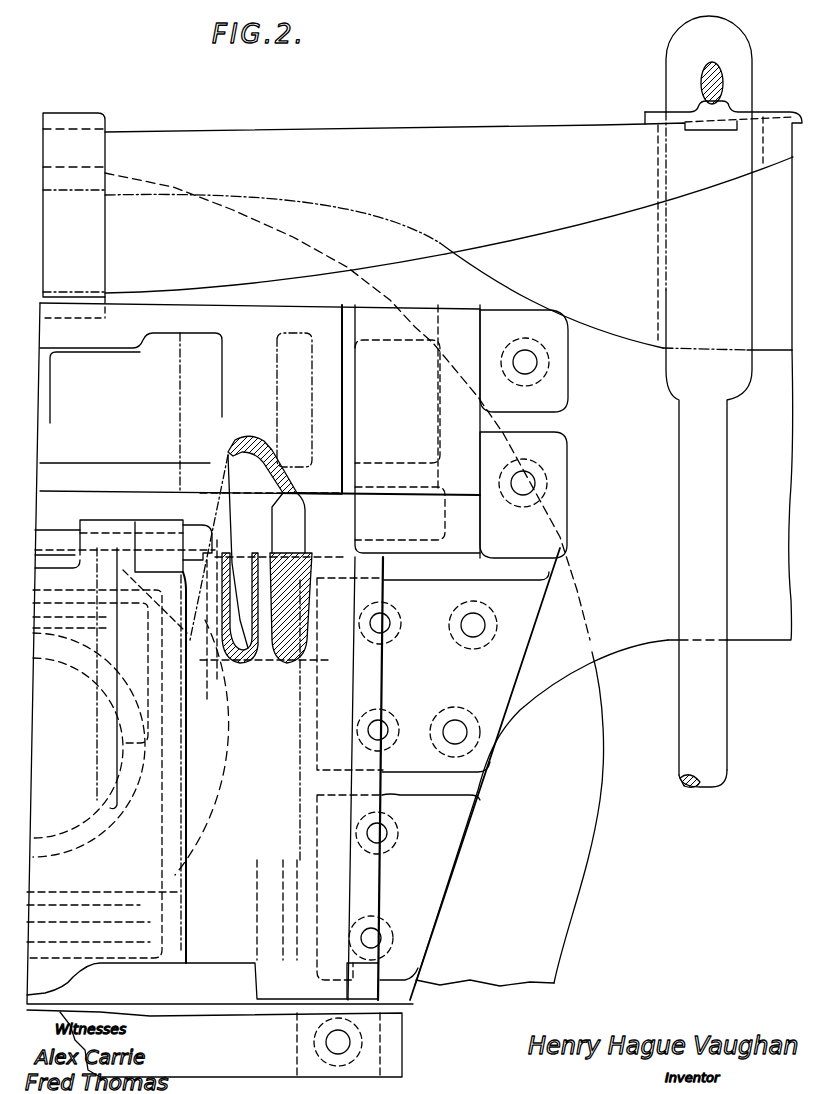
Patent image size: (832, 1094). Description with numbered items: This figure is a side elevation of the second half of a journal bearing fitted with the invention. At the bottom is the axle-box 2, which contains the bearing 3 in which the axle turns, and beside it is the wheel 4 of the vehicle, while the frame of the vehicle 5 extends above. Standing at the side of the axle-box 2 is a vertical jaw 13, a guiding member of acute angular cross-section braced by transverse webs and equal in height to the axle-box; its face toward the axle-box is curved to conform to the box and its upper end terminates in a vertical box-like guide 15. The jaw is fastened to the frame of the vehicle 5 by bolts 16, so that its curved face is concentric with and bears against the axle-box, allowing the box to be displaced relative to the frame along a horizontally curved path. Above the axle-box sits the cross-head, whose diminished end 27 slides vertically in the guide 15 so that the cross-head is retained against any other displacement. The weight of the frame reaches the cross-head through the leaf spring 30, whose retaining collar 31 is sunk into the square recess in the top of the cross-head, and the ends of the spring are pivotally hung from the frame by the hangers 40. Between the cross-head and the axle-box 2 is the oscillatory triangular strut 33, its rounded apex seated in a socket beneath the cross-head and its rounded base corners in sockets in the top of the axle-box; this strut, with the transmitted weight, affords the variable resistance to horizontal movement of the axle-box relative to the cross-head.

The axle-box 2 is at (133, 741).
The bearing 3 is at (143, 762).
The wheel 4 is at (584, 886).
The frame of the vehicle 5 is at (575, 663).
The vertical jaw 13 is at (373, 685).
The vertical box-like guide 15 is at (460, 310).
The bolt 16 is at (530, 368).
The diminished end 27 is at (524, 434).
The leaf spring 30 is at (449, 378).
The retaining collar 31 is at (100, 118).
The oscillatory triangular strut 33 is at (267, 558).
The hanger 40 is at (723, 401).